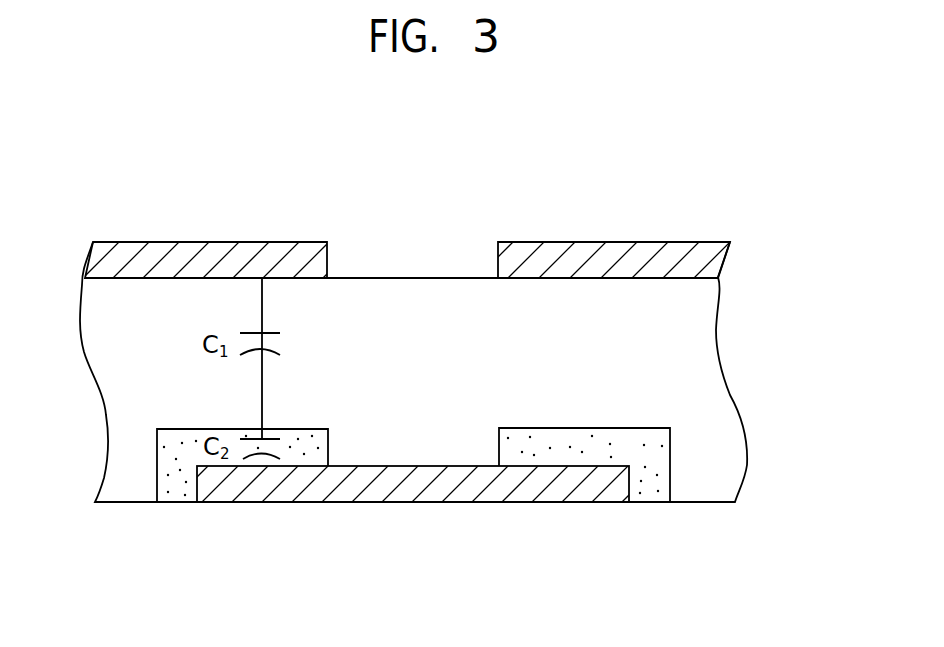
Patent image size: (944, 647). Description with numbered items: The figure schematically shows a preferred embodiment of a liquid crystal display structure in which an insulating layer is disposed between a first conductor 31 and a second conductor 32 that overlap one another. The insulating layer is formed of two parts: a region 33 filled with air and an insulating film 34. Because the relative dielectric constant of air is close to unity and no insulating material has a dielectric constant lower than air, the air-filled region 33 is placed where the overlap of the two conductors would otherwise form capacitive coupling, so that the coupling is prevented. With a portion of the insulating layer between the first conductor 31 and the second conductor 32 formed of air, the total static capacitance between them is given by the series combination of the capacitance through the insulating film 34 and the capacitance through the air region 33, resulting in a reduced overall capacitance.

The first conductor 31 is at (522, 492).
The second conductor 32 is at (250, 257).
The region filled with air 33 is at (320, 450).
The insulating film 34 is at (708, 387).